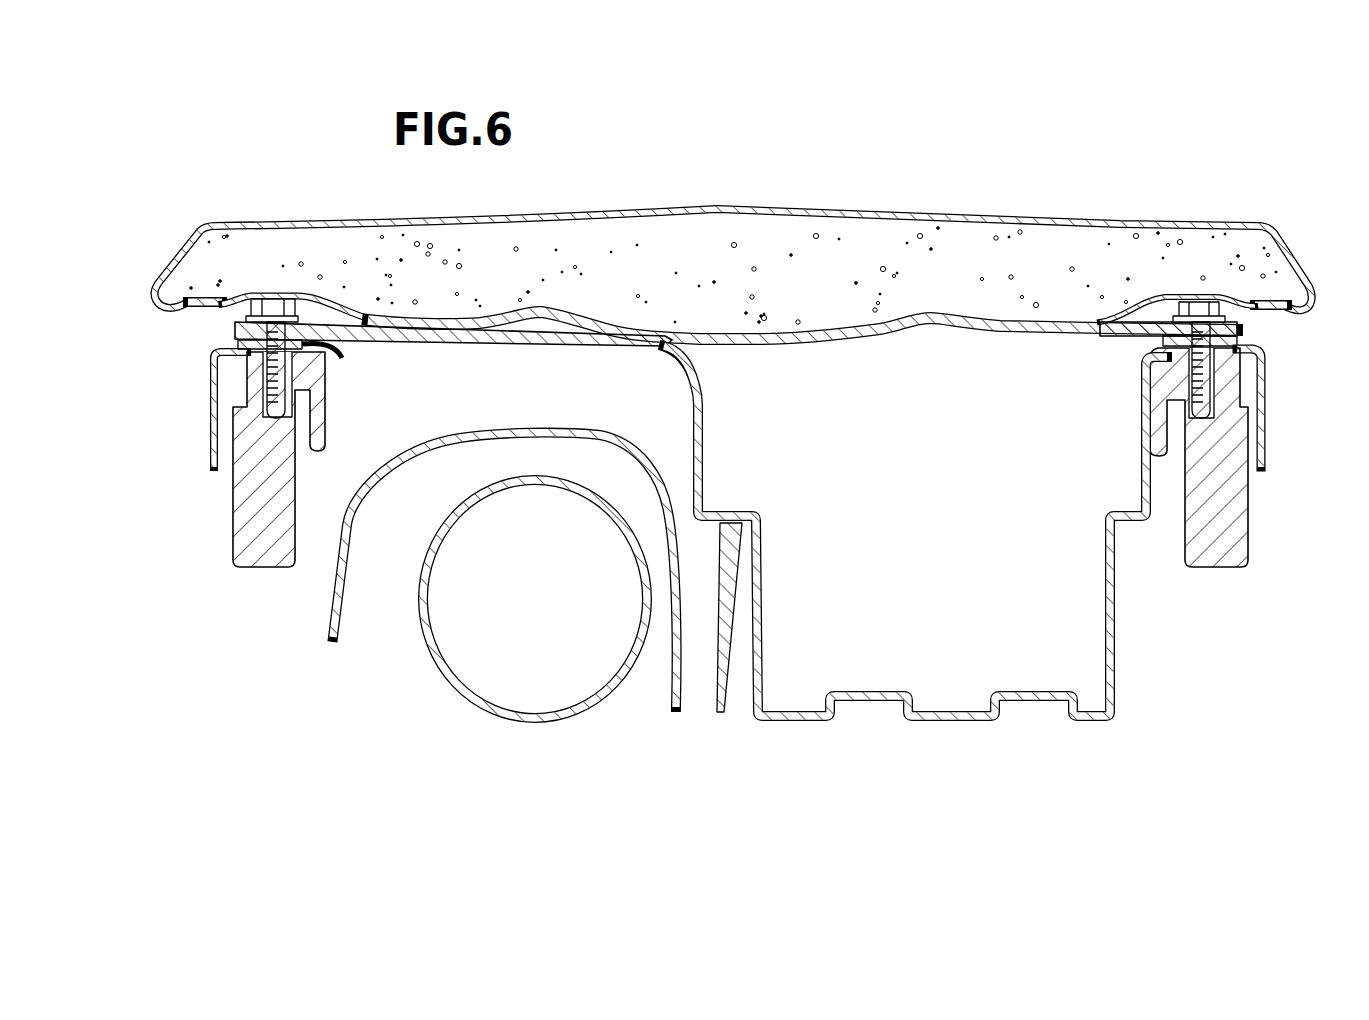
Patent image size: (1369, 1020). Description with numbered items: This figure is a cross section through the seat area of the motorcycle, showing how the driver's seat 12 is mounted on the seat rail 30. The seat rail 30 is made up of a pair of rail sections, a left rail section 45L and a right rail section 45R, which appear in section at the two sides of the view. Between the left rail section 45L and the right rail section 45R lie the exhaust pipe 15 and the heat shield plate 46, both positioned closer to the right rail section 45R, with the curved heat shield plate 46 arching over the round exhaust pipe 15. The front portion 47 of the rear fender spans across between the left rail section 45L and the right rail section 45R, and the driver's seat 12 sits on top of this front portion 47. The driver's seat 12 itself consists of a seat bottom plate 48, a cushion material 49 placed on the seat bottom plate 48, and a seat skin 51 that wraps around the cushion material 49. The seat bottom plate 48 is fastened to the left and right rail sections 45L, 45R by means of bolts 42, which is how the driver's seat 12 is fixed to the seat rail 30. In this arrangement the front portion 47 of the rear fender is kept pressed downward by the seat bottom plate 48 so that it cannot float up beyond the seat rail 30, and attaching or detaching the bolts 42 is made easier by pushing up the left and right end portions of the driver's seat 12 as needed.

The driver's seat 12 is at (1024, 194).
The exhaust pipe 15 is at (490, 720).
The seat rail 30 is at (208, 578).
The bolts 42 is at (240, 312).
The right rail section 45R is at (263, 568).
The left rail section 45L is at (1228, 556).
The heat shield plate 46 is at (412, 458).
The front portion of the rear fender 47 is at (798, 722).
The seat bottom plate 48 is at (794, 346).
The cushion material 49 is at (823, 275).
The seat skin 51 is at (700, 207).